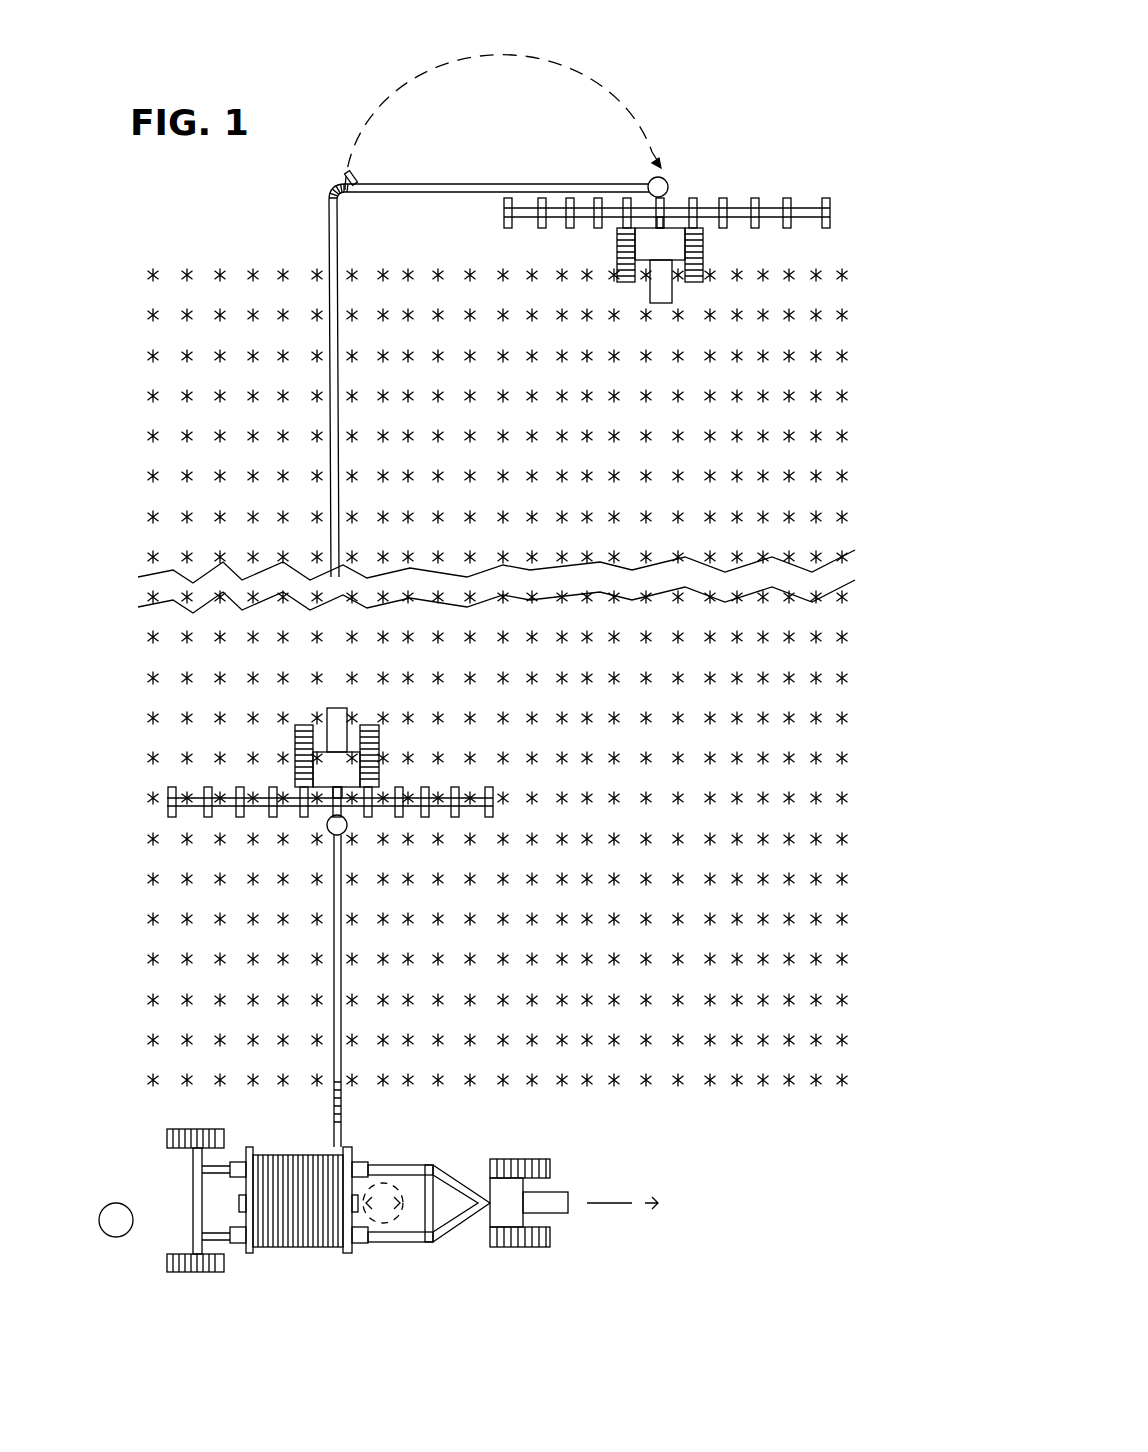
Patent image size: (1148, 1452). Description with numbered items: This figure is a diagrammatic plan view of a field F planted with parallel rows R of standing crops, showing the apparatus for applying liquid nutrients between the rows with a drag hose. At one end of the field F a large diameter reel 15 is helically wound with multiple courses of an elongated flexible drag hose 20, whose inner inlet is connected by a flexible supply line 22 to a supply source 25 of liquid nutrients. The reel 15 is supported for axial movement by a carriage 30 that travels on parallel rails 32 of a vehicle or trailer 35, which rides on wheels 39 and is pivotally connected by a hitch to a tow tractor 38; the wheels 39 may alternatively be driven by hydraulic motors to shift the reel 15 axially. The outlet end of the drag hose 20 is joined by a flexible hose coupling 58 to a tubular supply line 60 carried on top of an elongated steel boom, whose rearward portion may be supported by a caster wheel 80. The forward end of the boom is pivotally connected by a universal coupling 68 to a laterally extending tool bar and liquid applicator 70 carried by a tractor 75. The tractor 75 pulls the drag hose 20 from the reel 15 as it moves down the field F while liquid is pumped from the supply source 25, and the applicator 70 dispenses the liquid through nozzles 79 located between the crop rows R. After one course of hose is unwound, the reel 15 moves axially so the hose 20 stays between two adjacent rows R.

The reel 15 is at (238, 1213).
The drag hose 20 is at (341, 497).
The flexible supply line 22 is at (413, 1163).
The supply source 25 is at (116, 1226).
The carriage 30 is at (238, 1154).
The rails 32 is at (380, 1237).
The vehicle or trailer 35 is at (417, 1218).
The tow tractor 38 is at (551, 1191).
The wheels 39 is at (167, 1138).
The hose coupling 58 is at (330, 192).
The tubular supply line 60 is at (425, 184).
The universal coupling 68 is at (666, 181).
The tool bar and liquid applicator 70 is at (505, 508).
The tractor 75 is at (704, 255).
The nozzles 79 is at (571, 230).
The caster wheel 80 is at (356, 181).
The crop rows R is at (700, 919).
The field F is at (852, 527).